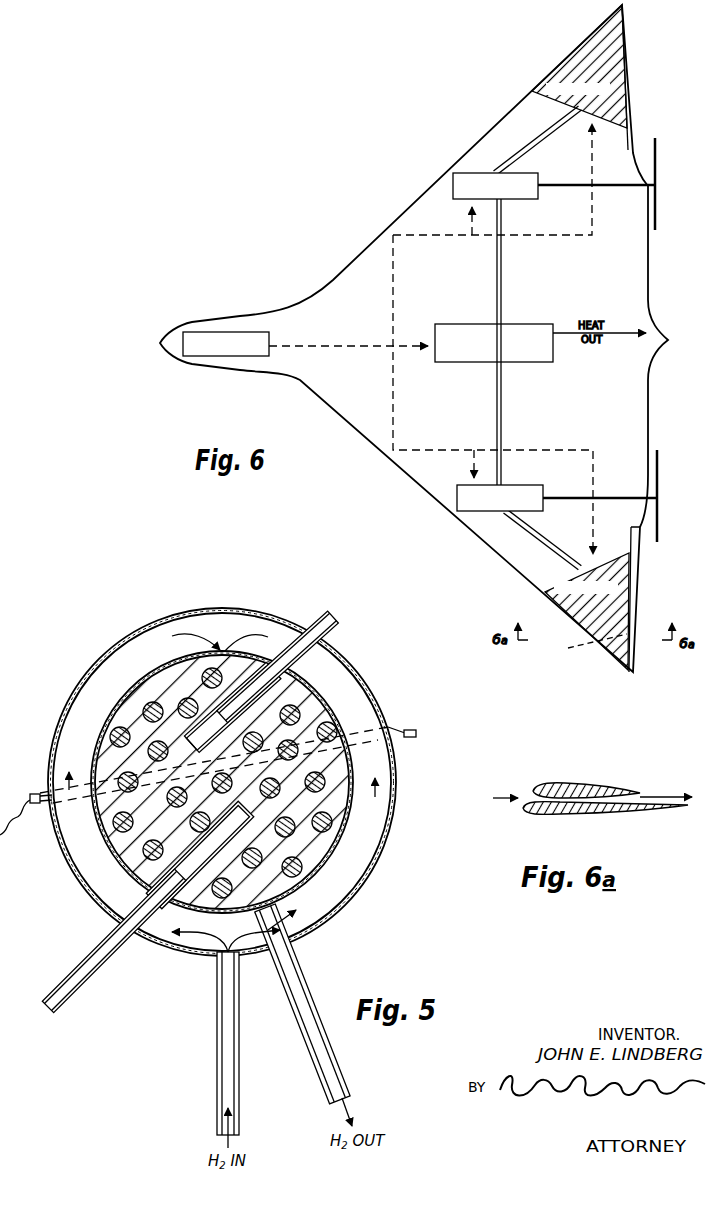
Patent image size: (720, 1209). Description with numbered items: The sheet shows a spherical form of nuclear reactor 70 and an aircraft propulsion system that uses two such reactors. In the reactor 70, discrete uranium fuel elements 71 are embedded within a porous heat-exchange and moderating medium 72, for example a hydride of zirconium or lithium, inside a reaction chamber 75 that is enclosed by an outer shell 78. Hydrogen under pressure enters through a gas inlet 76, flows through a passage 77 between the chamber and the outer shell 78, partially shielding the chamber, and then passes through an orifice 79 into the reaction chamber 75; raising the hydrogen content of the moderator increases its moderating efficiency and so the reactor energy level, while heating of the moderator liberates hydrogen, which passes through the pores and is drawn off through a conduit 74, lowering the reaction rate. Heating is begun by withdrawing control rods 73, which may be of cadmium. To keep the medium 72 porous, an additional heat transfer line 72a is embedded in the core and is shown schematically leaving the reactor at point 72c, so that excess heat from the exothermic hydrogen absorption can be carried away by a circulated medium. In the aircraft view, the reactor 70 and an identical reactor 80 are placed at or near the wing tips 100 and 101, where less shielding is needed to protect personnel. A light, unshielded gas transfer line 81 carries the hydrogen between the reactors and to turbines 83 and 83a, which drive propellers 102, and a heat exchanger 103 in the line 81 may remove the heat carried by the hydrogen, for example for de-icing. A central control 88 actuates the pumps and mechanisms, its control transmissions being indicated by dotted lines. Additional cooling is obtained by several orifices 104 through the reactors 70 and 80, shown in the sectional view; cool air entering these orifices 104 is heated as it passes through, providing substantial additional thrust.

In FIG. 6, the nuclear reactor 70 is at (567, 57).
In FIG. 5, the nuclear reactor 70 is at (371, 874).
In FIG. 5, the uranium fuel elements 71 is at (305, 709).
In FIG. 5, the heat-exchange and moderating medium 72 is at (120, 853).
In FIG. 5, the additional heat transfer line 72a is at (33, 793).
In FIG. 5, the heat transfer line exit point 72c is at (424, 712).
In FIG. 5, the control rods 73 is at (340, 617).
In FIG. 5, the conduit 74 is at (309, 1060).
In FIG. 5, the reaction chamber 75 is at (332, 862).
In FIG. 5, the gas inlet 76 is at (217, 1078).
In FIG. 5, the passage 77 is at (203, 956).
In FIG. 5, the outer shell 78 is at (396, 766).
In FIG. 5, the orifice 79 is at (232, 645).
In FIG. 6, the nuclear reactor 80 is at (576, 622).
In FIG. 6a, the nuclear reactor 80 is at (576, 809).
In FIG. 6, the gas transfer line 81 is at (542, 139).
In FIG. 6, the turbine 83 is at (522, 199).
In FIG. 6, the turbine 83a is at (510, 485).
In FIG. 6, the central control 88 is at (240, 332).
In FIG. 6, the wing tip 100 is at (596, 31).
In FIG. 6, the wing tip 101 is at (607, 654).
In FIG. 6, the propellers 102 is at (657, 176).
In FIG. 6, the heat exchanger 103 is at (463, 324).
In FIG. 6, the orifices 104 is at (584, 647).
In FIG. 6a, the orifices 104 is at (536, 790).